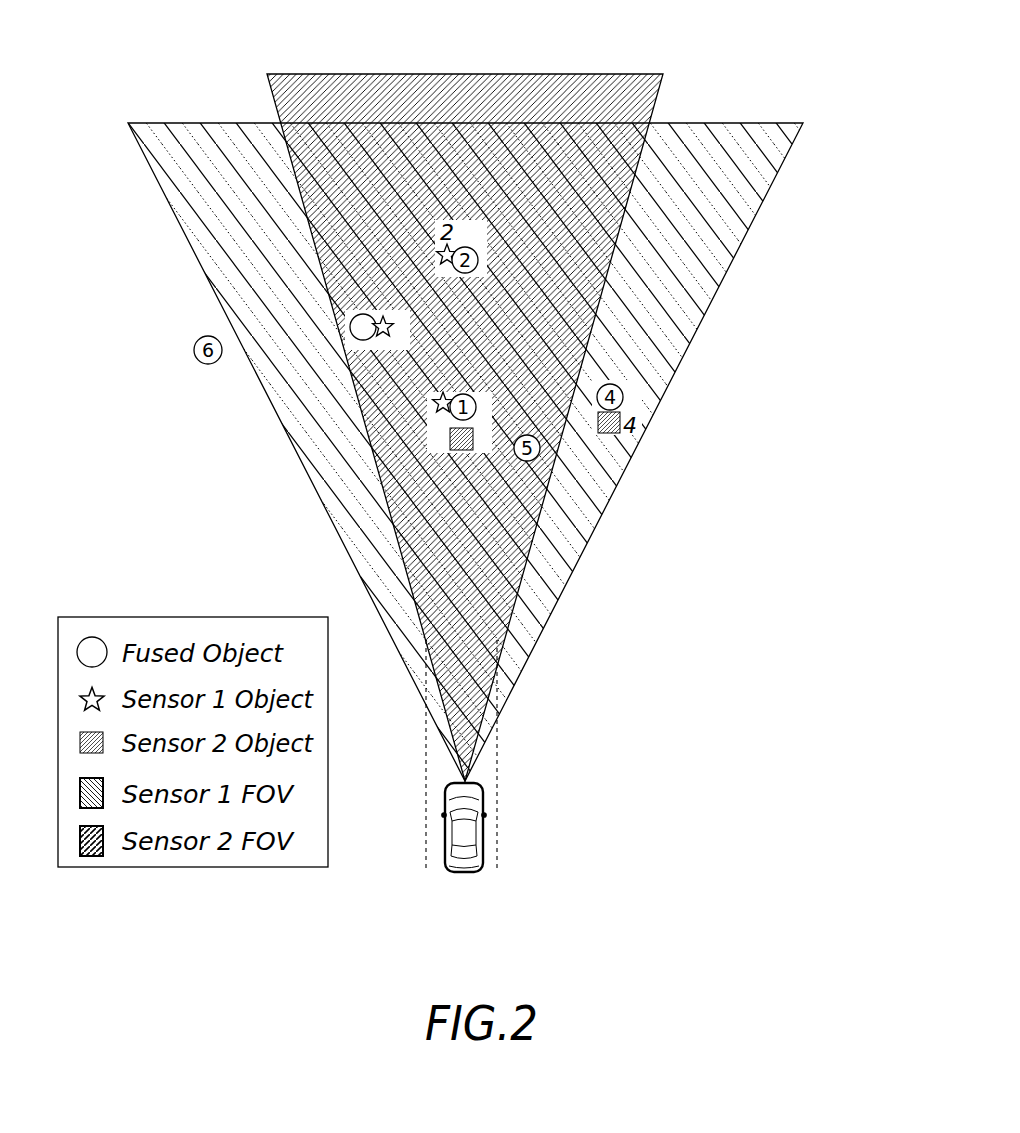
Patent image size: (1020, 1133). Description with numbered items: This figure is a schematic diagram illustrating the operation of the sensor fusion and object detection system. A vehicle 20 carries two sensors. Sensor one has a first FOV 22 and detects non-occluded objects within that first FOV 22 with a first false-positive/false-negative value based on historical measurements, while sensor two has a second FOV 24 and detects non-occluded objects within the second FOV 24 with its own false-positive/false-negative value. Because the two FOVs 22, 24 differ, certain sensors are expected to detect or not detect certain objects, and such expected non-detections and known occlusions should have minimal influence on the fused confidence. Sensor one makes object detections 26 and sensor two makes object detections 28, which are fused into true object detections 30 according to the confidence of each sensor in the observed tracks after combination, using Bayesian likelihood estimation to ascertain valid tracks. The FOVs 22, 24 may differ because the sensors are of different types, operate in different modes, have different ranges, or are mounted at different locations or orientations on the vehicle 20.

The vehicle 20 is at (490, 818).
The first FOV 22 is at (720, 316).
The second FOV 24 is at (668, 73).
The object detections of sensor 1 26 is at (437, 380).
The object detections of sensor 2 28 is at (480, 413).
The true object detections 30 is at (355, 302).